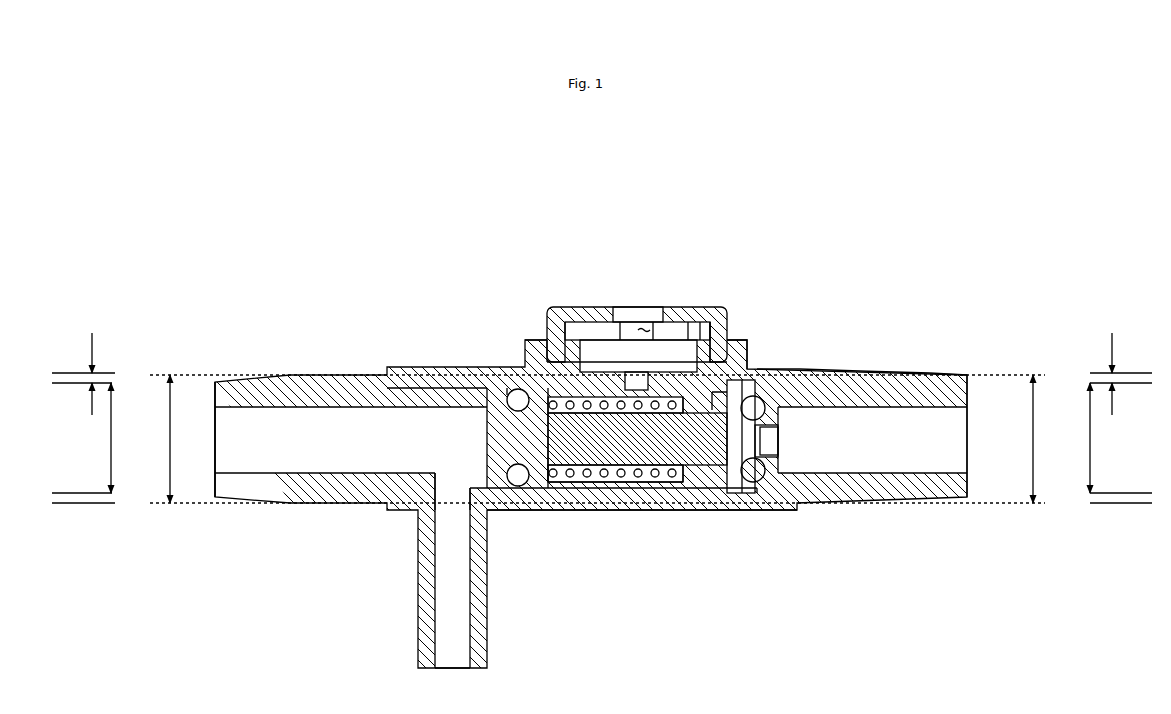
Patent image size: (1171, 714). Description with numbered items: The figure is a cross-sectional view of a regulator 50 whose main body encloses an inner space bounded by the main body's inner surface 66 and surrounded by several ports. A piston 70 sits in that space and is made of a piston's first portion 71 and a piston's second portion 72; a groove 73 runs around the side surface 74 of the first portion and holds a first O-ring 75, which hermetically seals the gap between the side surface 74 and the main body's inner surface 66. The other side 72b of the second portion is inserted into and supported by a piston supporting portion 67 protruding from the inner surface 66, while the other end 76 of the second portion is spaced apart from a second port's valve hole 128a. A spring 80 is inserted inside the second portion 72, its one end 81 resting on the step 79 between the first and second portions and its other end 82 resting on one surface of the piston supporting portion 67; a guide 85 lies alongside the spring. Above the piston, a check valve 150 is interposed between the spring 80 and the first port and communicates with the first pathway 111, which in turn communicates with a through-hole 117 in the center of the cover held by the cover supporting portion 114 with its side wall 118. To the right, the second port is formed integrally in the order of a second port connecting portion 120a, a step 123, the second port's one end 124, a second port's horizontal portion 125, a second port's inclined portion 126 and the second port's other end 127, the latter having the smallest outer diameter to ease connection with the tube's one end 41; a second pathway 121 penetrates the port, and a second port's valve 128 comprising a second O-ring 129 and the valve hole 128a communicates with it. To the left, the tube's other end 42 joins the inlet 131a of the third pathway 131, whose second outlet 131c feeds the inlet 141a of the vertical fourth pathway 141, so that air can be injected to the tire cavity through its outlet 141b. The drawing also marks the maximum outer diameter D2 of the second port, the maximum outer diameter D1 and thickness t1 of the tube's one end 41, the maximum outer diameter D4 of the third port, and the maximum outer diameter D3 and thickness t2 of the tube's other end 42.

The regulator 50 is at (385, 302).
The third pathway 131 is at (314, 455).
The inlet of the third pathway 131a is at (214, 423).
The second outlet of the third pathway 131c is at (456, 485).
The fourth pathway 141 is at (447, 608).
The inlet of the fourth pathway 141a is at (457, 497).
The outlet of the fourth pathway 141b is at (452, 670).
The tube's other end 42 is at (80, 488).
The tube's one end 41 is at (1120, 488).
The piston 70 is at (517, 622).
The piston's first portion 71 is at (550, 470).
The piston's second portion 72 is at (595, 450).
The other side of the piston's second portion 72b is at (697, 395).
The groove 73 is at (512, 394).
The side surface of the first portion of the piston 74 is at (533, 340).
The first O-ring 75 is at (518, 400).
The other end of the piston's second portion 76 is at (745, 350).
The step between the piston's first and second portions 79 is at (557, 362).
The spring 80 is at (642, 489).
The spring's one end 81 is at (553, 482).
The spring's other end 82 is at (668, 486).
The spring guide 85 is at (612, 483).
The main body's inner surface 66 is at (659, 490).
The piston supporting portion 67 is at (701, 481).
The first pathway 111 is at (643, 325).
The cover supporting portion 114 is at (726, 315).
The through-hole 117 is at (627, 315).
The cap side wall 118 is at (720, 345).
The check valve 150 is at (670, 353).
The second port connecting portion 120a is at (784, 508).
The second pathway 121 is at (950, 444).
The step between the second port connecting portion and the one end of the second po 123 is at (762, 492).
The second port's one end 124 is at (797, 368).
The second port's horizontal portion 125 is at (843, 373).
The second port's inclined portion 126 is at (918, 376).
The second port's other end 127 is at (965, 370).
The second port's valve 128 is at (748, 447).
The second port's valve hole 128a is at (772, 433).
The second O-ring 129 is at (757, 481).
The maximum outer diameter of the tube's one end D1 is at (1079, 438).
The maximum outer diameter of the second port D2 is at (1019, 439).
The maximum outer diameter of the tube's other end D3 is at (121, 438).
The maximum outer diameter of the third port D4 is at (183, 439).
The thickness of the tube's one end t1 is at (1123, 374).
The thickness of the tube's other end t2 is at (79, 374).